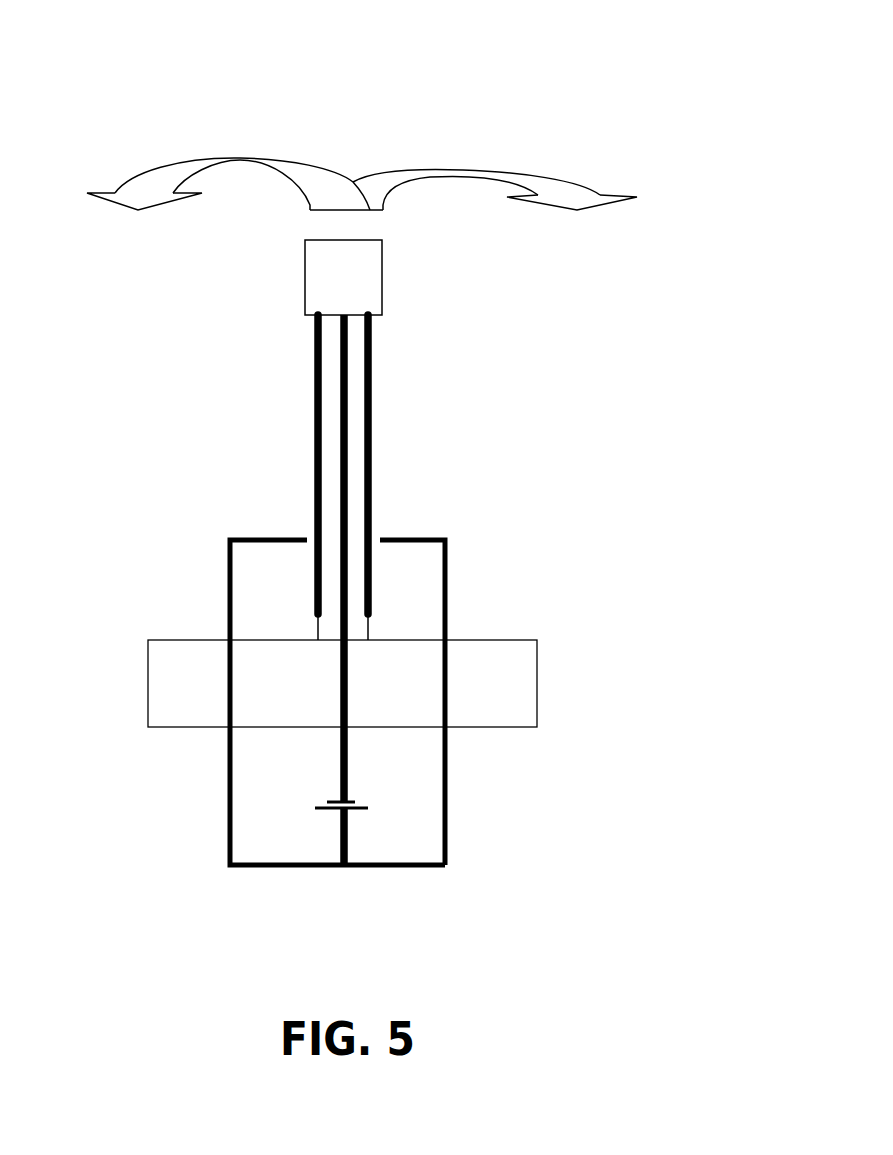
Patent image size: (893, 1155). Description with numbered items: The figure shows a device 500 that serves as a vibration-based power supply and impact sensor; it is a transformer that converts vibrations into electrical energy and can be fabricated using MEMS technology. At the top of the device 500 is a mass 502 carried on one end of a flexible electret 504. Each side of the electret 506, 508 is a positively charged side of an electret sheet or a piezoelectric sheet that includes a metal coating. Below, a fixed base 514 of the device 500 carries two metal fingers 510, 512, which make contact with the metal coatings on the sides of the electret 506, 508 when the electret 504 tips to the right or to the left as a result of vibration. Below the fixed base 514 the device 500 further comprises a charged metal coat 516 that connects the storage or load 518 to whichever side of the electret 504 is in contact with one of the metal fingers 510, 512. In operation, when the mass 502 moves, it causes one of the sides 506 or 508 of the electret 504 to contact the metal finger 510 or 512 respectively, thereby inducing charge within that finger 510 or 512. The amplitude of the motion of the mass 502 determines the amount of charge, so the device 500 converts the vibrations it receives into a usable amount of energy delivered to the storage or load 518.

The device 500 is at (523, 96).
The mass 502 is at (382, 240).
The flexible electret 504 is at (356, 590).
The side of the electret 506 is at (372, 498).
The side of the electret 508 is at (314, 522).
The metal finger 510 is at (445, 608).
The metal finger 512 is at (228, 592).
The fixed base 514 is at (148, 702).
The charged metal coat 516 is at (340, 770).
The storage or load 518 is at (328, 812).